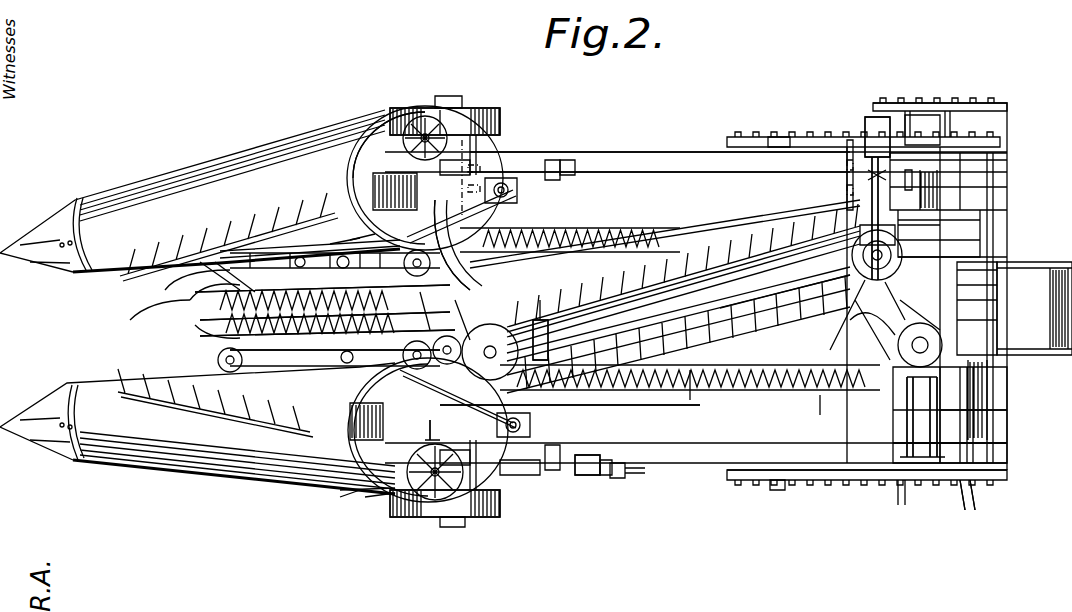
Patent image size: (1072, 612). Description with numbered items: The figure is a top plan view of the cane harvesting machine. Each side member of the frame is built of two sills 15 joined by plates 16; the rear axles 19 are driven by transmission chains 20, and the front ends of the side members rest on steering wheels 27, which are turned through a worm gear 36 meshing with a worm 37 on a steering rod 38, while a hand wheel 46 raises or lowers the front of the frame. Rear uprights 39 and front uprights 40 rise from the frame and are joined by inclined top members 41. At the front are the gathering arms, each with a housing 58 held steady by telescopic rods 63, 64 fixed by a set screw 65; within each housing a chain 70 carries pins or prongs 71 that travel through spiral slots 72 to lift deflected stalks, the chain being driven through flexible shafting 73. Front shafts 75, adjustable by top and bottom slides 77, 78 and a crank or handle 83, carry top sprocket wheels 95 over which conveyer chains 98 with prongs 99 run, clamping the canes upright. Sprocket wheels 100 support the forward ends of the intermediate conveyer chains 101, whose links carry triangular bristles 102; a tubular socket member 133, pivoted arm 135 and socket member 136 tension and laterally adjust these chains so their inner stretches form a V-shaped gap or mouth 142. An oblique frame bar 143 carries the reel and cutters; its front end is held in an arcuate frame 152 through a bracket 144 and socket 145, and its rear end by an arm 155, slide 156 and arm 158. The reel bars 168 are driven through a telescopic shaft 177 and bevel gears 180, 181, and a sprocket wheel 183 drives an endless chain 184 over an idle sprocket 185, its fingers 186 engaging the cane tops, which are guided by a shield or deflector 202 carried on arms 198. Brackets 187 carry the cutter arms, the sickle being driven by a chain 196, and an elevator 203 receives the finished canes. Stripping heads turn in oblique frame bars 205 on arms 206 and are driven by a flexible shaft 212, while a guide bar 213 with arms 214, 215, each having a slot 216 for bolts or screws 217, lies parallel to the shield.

The sills 15 is at (703, 463).
The plate 16 is at (645, 463).
The axles 19 is at (780, 485).
The transmission chains 20 is at (855, 480).
The steering wheels 27 is at (400, 490).
The worm gear 36 is at (605, 475).
The worm 37 is at (585, 475).
The steering rod 38 is at (615, 478).
The rear uprights 39 is at (945, 430).
The front uprights 40 is at (330, 512).
The top members 41 is at (672, 445).
The hand wheel 46 is at (440, 527).
The housing 58 is at (125, 480).
The tubular telescopic rod 63 is at (360, 405).
The telescopic rod 64 is at (505, 437).
The set screw 65 is at (485, 255).
The chain 70 is at (334, 223).
The pins or prongs 71 is at (168, 398).
The slots 72 is at (150, 380).
The flexible shafting 73 is at (200, 335).
The front shafts 75 is at (443, 327).
The top slide 77 is at (475, 492).
The bottom slide 78 is at (555, 472).
The crank or handle 83 is at (900, 500).
The top sprocket wheels 95 is at (946, 276).
The conveyer chains 98 is at (725, 388).
The prongs 99 is at (760, 388).
The sprocket wheels 100 is at (250, 316).
The conveyer chains 101 is at (300, 366).
The bristles 102 is at (150, 318).
The tubular socket member 133 is at (327, 319).
The pivoted arm 135 is at (310, 318).
The socket member 136 is at (304, 307).
The V-shaped gap or mouth 142 is at (170, 292).
The frame bar 143 is at (480, 405).
The bracket 144 is at (360, 495).
The socket 145 is at (375, 497).
The arcuate frame 152 is at (428, 432).
The rearwardly extending arm 155 is at (960, 447).
The slide 156 is at (995, 325).
The arm 158 is at (995, 298).
The reel bars 168 is at (800, 260).
The telescopic shaft 177 is at (960, 228).
The bevel gear 180 is at (995, 310).
The bevel gear 181 is at (960, 257).
The sprocket wheel 183 is at (960, 242).
The endless chain 184 is at (705, 262).
The idle sprocket 185 is at (556, 405).
The fingers 186 is at (655, 245).
The brackets 187 is at (640, 395).
The chain 196 is at (975, 500).
The arm 198 is at (810, 312).
The shield or deflector 202 is at (760, 275).
The elevator 203 is at (1036, 355).
The frame bars 205 is at (820, 395).
The arms 206 is at (930, 410).
The flexible shaft 212 is at (907, 400).
The guide bar 213 is at (612, 265).
The front arm 214 is at (405, 150).
The rear arm 215 is at (870, 125).
The slot 216 is at (845, 150).
The bolts or screws 217 is at (848, 183).